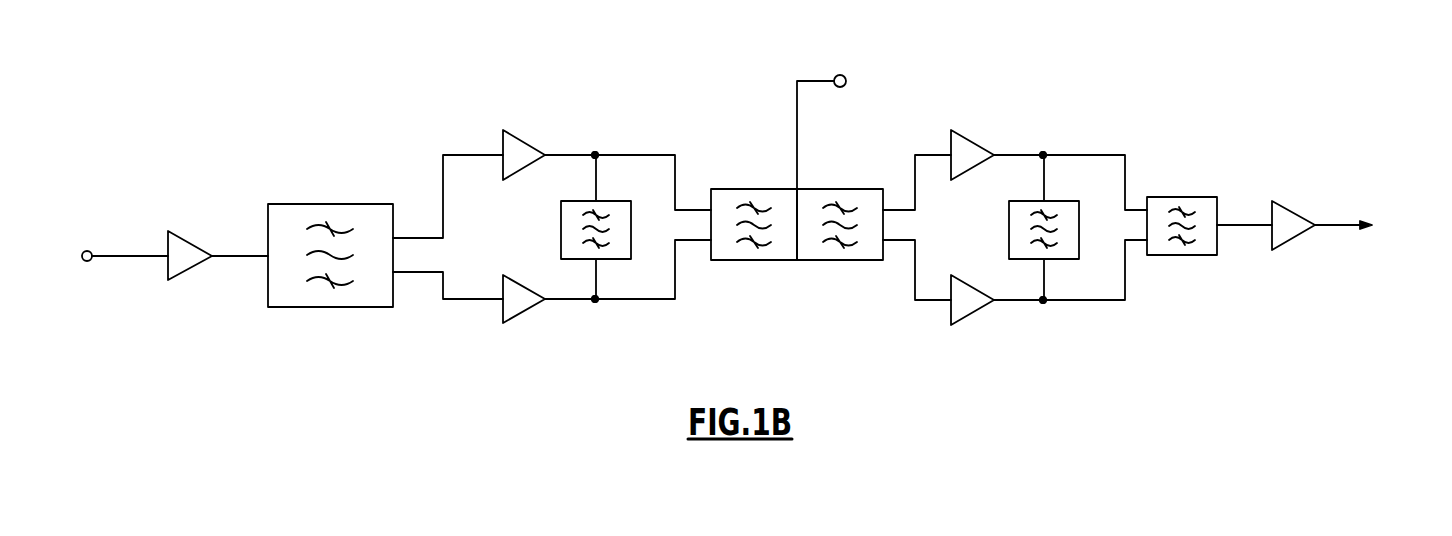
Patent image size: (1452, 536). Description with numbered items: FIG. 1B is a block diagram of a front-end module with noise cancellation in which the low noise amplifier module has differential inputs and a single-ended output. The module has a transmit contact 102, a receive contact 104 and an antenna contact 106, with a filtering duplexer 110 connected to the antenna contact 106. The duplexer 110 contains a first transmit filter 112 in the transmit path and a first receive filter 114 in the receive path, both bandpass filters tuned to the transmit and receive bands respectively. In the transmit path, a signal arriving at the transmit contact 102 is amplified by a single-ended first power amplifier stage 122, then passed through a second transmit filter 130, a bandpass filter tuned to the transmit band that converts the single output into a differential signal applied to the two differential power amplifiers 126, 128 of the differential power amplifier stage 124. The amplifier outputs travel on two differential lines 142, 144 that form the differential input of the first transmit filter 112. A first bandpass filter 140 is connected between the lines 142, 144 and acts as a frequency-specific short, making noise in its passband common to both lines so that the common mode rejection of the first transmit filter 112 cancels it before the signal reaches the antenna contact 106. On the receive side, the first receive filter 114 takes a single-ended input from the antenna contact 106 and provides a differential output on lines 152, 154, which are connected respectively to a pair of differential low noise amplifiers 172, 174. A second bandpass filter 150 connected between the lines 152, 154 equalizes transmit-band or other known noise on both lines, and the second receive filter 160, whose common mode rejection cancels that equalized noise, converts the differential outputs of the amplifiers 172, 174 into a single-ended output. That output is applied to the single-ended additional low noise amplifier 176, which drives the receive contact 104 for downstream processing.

The transmit contact 102 is at (87, 262).
The receive contact 104 is at (1368, 222).
The antenna contact 106 is at (846, 77).
The filtering duplexer 110 is at (796, 239).
The first transmit filter 112 is at (757, 189).
The first receive filter 114 is at (823, 189).
The first power amplifier stage 122 is at (183, 232).
The differential power amplifier stage 124 is at (492, 240).
The differential power amplifier 126 is at (516, 131).
The differential power amplifier 128 is at (516, 276).
The second transmit filter 130 is at (327, 308).
The first bandpass filter 140 is at (604, 200).
The differential line 142 is at (572, 154).
The differential line 144 is at (577, 300).
The second bandpass filter 150 is at (1053, 200).
The differential line 152 is at (1022, 154).
The differential line 154 is at (1025, 300).
The second receive filter 160 is at (1190, 256).
The differential low noise amplifier 172 is at (966, 131).
The differential low noise amplifier 174 is at (966, 277).
The additional low noise amplifier 176 is at (1288, 170).